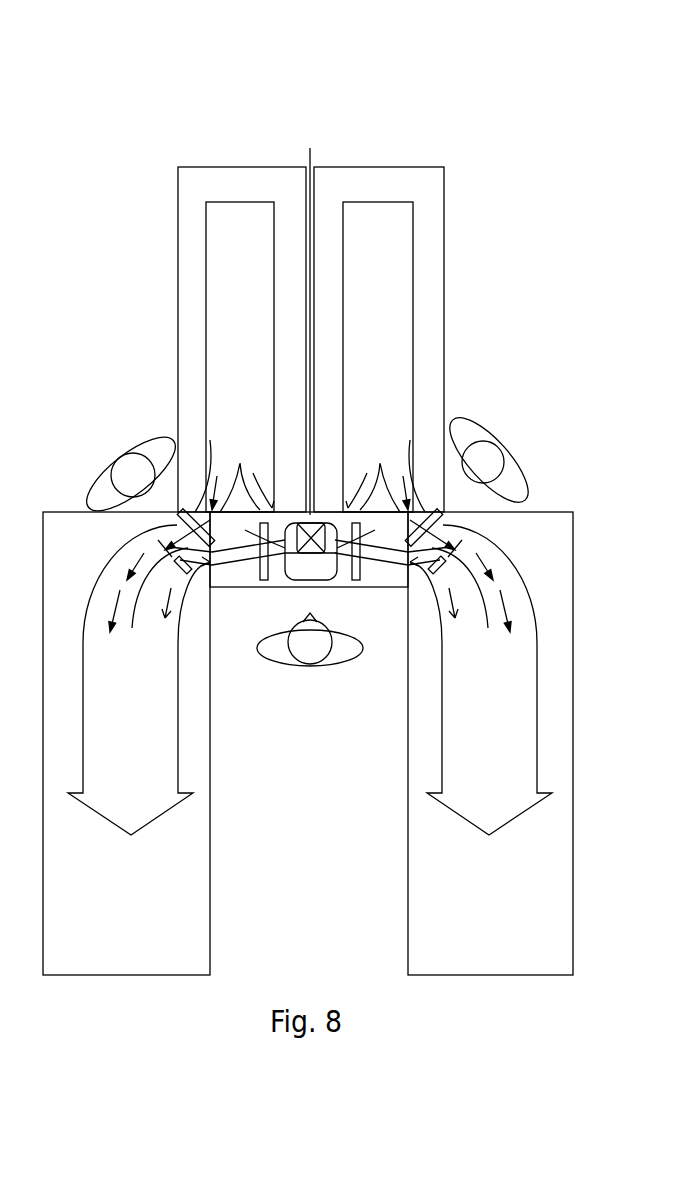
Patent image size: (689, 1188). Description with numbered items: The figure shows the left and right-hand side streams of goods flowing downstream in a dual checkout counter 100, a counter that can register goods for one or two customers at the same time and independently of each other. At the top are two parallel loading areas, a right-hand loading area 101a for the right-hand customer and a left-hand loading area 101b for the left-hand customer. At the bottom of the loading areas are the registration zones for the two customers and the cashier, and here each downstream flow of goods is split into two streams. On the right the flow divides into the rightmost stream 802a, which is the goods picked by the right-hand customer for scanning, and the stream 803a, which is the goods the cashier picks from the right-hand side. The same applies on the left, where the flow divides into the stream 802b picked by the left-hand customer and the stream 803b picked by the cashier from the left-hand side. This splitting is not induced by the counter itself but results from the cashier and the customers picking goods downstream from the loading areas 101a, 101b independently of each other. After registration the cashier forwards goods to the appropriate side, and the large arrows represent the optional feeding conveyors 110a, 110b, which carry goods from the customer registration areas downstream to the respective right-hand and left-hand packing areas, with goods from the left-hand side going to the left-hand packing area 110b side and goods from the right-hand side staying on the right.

The dual checkout counter 100 is at (342, 61).
The right-hand loading area 101a is at (379, 339).
The left-hand loading area 101b is at (242, 339).
The right-hand customer flow of goods 802a is at (422, 467).
The left-hand customer flow of goods 802b is at (197, 486).
The right-hand cashier flow of goods 803a is at (330, 513).
The left-hand cashier flow of goods 803b is at (275, 487).
The right-hand feeding conveyor 110a is at (481, 680).
The left-hand feeding conveyor 110b is at (139, 680).